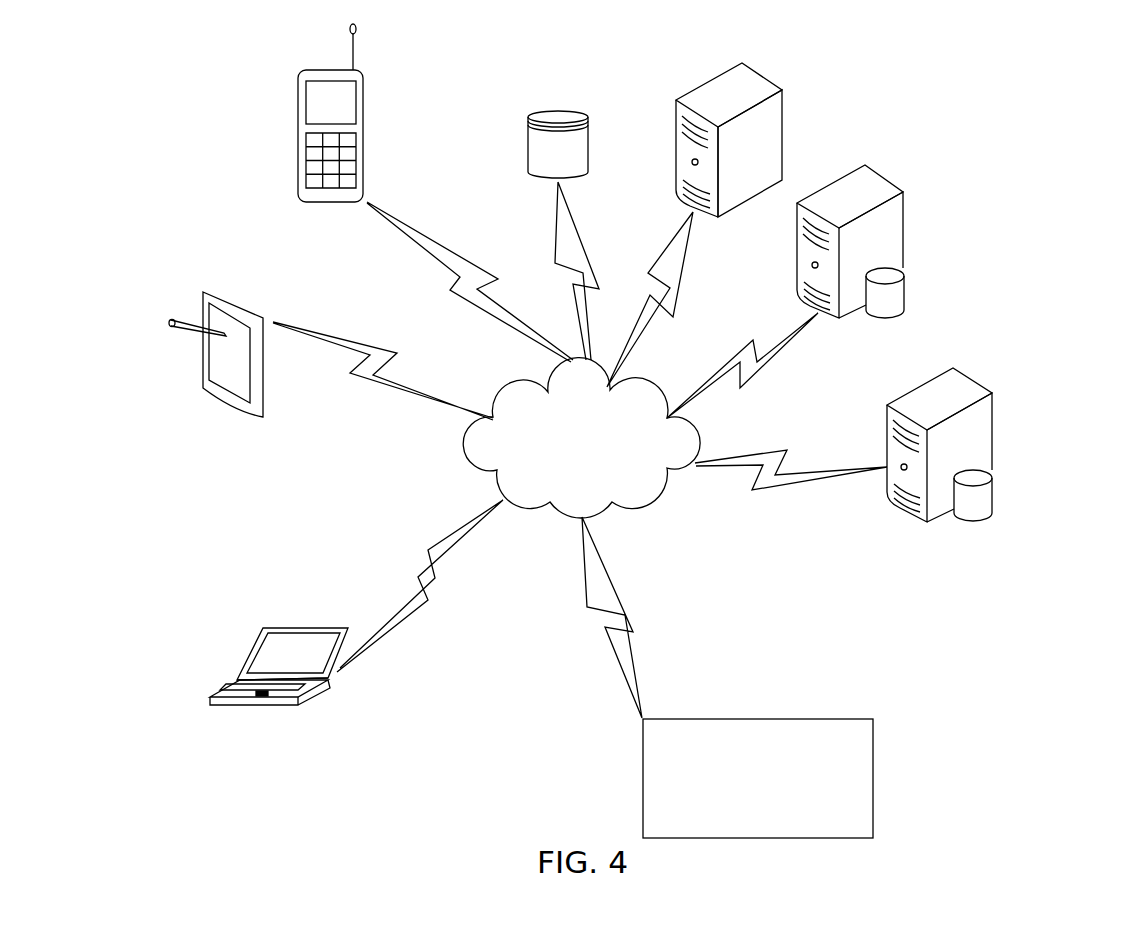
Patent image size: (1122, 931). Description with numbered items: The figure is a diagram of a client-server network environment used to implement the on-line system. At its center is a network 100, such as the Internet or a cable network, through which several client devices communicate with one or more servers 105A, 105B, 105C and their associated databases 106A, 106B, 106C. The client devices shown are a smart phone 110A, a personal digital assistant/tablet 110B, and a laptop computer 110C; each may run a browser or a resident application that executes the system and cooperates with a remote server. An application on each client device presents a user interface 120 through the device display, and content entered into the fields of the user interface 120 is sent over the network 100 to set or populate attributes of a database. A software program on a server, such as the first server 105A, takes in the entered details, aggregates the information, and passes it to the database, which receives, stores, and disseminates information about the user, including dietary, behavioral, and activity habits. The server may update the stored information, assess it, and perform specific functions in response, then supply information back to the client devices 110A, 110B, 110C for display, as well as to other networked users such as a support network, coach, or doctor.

The network 100 is at (603, 462).
The first server 105A is at (782, 119).
The server 105B is at (903, 218).
The server 105C is at (992, 435).
The database 106A is at (558, 110).
The database 106B is at (904, 305).
The database 106C is at (992, 505).
The smart phone 110A is at (298, 145).
The personal digital assistant/tablet 110B is at (263, 640).
The laptop computer 110C is at (203, 370).
The user interface 120 is at (762, 718).